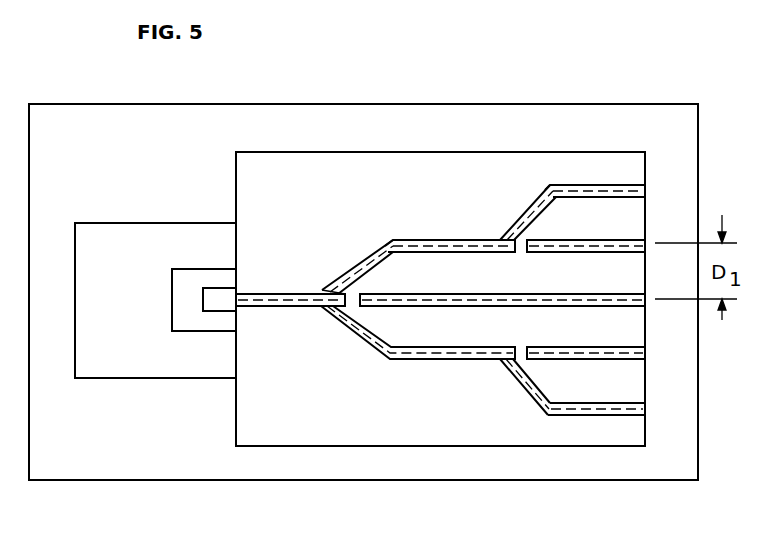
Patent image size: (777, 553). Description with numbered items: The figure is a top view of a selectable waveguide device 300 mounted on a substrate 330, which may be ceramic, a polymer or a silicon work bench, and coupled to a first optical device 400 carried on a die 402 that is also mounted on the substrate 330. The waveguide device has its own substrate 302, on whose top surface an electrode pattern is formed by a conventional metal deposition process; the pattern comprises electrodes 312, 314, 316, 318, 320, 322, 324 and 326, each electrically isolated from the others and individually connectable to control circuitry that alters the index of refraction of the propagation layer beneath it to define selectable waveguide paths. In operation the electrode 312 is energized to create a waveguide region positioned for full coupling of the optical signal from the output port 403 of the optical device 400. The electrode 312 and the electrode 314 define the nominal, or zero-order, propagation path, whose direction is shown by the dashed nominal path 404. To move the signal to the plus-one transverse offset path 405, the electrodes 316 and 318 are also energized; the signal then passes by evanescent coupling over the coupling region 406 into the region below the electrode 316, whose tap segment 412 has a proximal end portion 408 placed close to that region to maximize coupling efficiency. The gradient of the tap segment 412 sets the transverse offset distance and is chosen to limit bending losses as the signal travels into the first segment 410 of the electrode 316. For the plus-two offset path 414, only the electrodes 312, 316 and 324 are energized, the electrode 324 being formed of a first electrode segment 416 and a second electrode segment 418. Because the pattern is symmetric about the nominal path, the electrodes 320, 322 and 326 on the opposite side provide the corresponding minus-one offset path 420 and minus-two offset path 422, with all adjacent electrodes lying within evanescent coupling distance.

The selectable waveguide device 300 is at (578, 104).
The substrate 302 is at (235, 417).
The electrode 312 is at (276, 307).
The electrode 314 is at (481, 294).
The electrode 316 is at (393, 240).
The electrode 318 is at (632, 240).
The electrode 320 is at (390, 360).
The electrode 322 is at (625, 360).
The electrode 324 is at (632, 185).
The electrode 326 is at (556, 415).
The substrate 330 is at (505, 481).
The first optical device 400 is at (172, 323).
The die 402 is at (76, 223).
The output port 403 is at (217, 288).
The nominal path 404 is at (645, 302).
The +1 transverse offset path 405 is at (590, 253).
The coupling region 406 is at (327, 290).
The end portion 408 is at (336, 292).
The first segment 410 is at (428, 240).
The tap segment 412 is at (357, 265).
The +2 offset path 414 is at (645, 191).
The first electrode segment 416 is at (518, 219).
The second electrode segment 418 is at (565, 185).
The −1 offset path 420 is at (645, 352).
The −2 offset path 422 is at (645, 410).